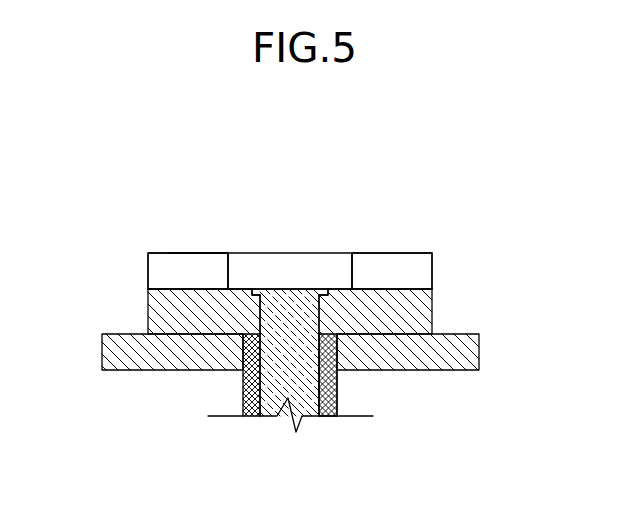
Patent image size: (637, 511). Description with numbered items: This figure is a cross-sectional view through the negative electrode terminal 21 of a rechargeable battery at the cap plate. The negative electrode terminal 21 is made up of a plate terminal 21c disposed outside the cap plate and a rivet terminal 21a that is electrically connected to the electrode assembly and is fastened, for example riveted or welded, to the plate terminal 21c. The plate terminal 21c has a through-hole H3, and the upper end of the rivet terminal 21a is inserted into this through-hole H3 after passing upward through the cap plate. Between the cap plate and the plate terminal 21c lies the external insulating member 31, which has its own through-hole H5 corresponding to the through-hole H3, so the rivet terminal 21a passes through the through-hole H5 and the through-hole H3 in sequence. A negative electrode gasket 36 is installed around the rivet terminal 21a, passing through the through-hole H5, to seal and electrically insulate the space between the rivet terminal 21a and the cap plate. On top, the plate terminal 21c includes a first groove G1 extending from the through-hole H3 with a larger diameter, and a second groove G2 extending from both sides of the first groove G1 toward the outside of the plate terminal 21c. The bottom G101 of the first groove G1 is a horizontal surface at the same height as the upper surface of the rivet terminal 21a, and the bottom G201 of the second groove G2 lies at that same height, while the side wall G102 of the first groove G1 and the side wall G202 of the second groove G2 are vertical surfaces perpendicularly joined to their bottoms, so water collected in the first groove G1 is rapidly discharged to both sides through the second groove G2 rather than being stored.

The negative electrode terminal 21 is at (243, 205).
The rivet terminal 21a is at (275, 388).
The plate terminal 21c is at (160, 305).
The external insulating member 31 is at (120, 352).
The negative electrode gasket 36 is at (245, 385).
The first groove G1 is at (398, 186).
The bottom of the first groove G101 is at (337, 287).
The side wall of the first groove G102 is at (352, 269).
The second groove G2 is at (188, 195).
The bottom of the second groove G201 is at (163, 288).
The side wall of the second groove G202 is at (180, 270).
The through-hole H3 is at (324, 315).
The through-hole H5 is at (338, 382).